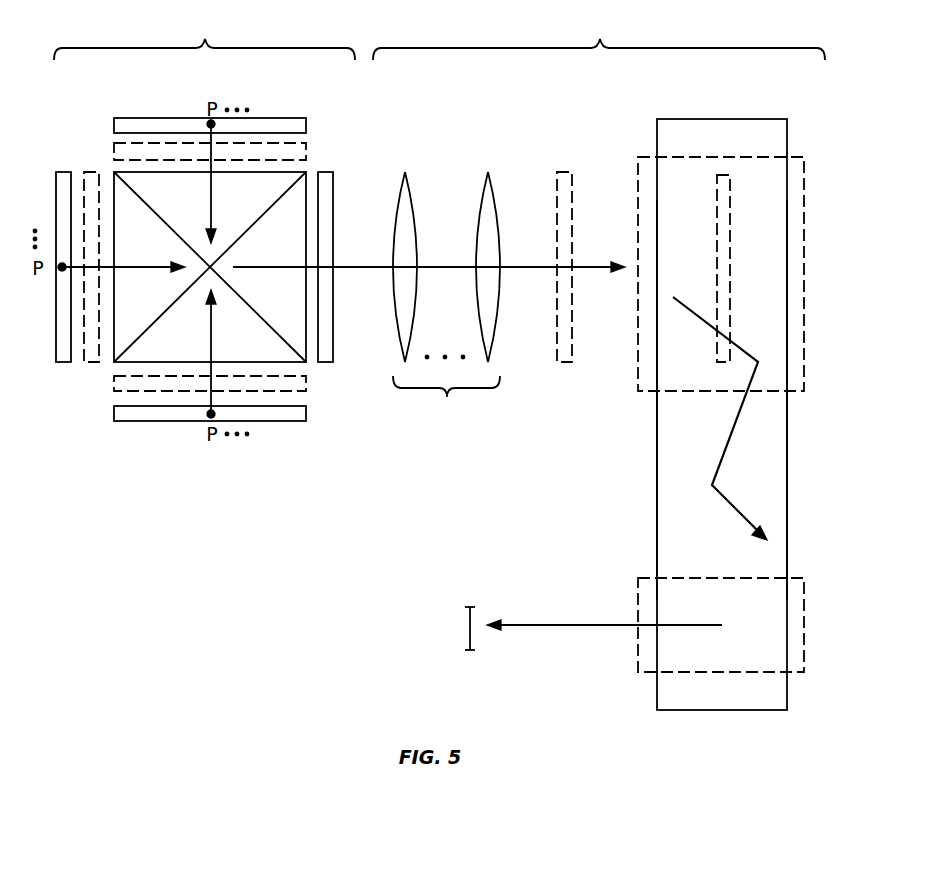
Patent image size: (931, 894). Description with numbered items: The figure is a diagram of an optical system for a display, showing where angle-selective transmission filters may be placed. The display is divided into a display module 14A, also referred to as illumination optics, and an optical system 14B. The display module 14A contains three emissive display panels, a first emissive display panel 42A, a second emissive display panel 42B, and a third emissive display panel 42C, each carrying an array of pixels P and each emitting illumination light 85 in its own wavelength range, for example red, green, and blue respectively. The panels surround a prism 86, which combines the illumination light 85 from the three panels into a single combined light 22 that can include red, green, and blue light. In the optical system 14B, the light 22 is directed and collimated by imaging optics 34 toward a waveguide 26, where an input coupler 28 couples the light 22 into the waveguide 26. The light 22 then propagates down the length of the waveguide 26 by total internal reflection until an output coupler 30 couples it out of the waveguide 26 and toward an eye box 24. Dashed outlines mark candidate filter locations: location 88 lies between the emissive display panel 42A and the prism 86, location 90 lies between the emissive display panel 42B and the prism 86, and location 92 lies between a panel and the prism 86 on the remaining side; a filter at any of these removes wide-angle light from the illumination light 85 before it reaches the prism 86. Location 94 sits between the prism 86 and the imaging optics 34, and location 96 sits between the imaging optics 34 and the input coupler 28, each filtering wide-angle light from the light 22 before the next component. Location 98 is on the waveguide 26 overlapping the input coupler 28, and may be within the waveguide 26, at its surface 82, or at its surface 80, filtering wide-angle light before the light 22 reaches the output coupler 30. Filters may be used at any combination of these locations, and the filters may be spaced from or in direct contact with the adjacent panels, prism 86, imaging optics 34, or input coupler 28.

The display module 14A is at (204, 37).
The optical system 14B is at (599, 37).
The light 22 is at (361, 266).
The eye box 24 is at (466, 628).
The waveguide 26 is at (779, 560).
The input coupler 28 is at (805, 368).
The output coupler 30 is at (805, 632).
The imaging optics 34 is at (446, 299).
The first emissive display panel 42A is at (307, 124).
The second emissive display panel 42B is at (62, 366).
The third emissive display panel 42C is at (307, 411).
The surface of waveguide 80 is at (797, 446).
The surface of waveguide 82 is at (651, 446).
The illumination light 85 is at (155, 265).
The prism 86 is at (300, 350).
The filter location 88 is at (307, 151).
The filter location 90 is at (93, 180).
The filter location 92 is at (307, 385).
The filter location 94 is at (334, 340).
The filter location 96 is at (573, 350).
The filter location 98 is at (731, 195).